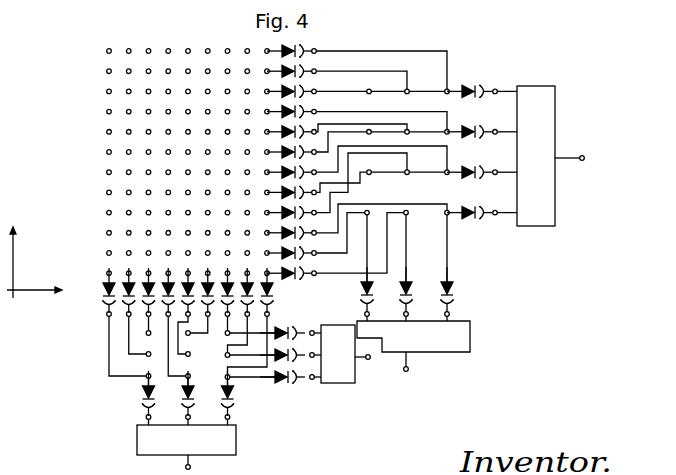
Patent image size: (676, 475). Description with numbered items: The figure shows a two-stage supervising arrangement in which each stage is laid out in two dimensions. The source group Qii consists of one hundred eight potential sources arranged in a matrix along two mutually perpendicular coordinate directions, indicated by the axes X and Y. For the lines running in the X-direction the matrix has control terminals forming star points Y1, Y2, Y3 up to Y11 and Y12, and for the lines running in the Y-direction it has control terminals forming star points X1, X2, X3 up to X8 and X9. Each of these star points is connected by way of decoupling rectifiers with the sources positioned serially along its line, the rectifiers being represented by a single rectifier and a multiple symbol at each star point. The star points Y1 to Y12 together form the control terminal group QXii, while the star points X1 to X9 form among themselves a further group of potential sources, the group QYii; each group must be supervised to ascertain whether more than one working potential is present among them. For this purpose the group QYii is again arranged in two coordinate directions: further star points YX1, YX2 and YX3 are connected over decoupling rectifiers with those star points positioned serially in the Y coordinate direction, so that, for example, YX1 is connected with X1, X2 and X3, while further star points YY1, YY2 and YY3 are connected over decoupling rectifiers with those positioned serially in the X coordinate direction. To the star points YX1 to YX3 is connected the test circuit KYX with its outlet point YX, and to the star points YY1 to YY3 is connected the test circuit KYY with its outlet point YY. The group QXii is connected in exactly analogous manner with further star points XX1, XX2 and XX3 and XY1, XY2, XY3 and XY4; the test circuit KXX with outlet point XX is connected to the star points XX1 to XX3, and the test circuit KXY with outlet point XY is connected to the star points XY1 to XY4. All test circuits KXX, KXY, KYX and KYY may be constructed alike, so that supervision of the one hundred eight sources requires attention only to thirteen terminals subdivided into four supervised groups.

The source group Qii is at (141, 15).
The control terminal group QXii is at (478, 74).
The group of potential sources QYii is at (170, 339).
The star point Y12 is at (379, 62).
The star point Y11 is at (359, 72).
The star point Y3 is at (379, 219).
The star point Y2 is at (338, 234).
The star point Y1 is at (358, 244).
The further star point XY4 is at (442, 100).
The further star point XY3 is at (442, 141).
The further star point XY2 is at (442, 181).
The further star point XY1 is at (481, 221).
The test circuit KXY is at (536, 156).
The outlet point XY is at (579, 159).
The star point X1 is at (119, 322).
The star point X2 is at (129, 311).
The star point X3 is at (143, 299).
The star point X8 is at (241, 310).
The star point X9 is at (251, 321).
The further star point YY3 is at (273, 324).
The further star point YY2 is at (273, 350).
The further star point YY1 is at (273, 372).
The test circuit KYY is at (338, 354).
The outlet point YY is at (367, 367).
The further star point XX1 is at (356, 265).
The further star point XX2 is at (395, 265).
The further star point XX3 is at (436, 268).
The test circuit KXX is at (413, 336).
The outlet point XX is at (416, 364).
The further star point YX1 is at (161, 378).
The further star point YX2 is at (200, 378).
The further star point YX3 is at (240, 398).
The test circuit KYX is at (186, 440).
The outlet point YX is at (197, 465).
The X coordinate direction X is at (39, 291).
The Y coordinate direction Y is at (12, 255).